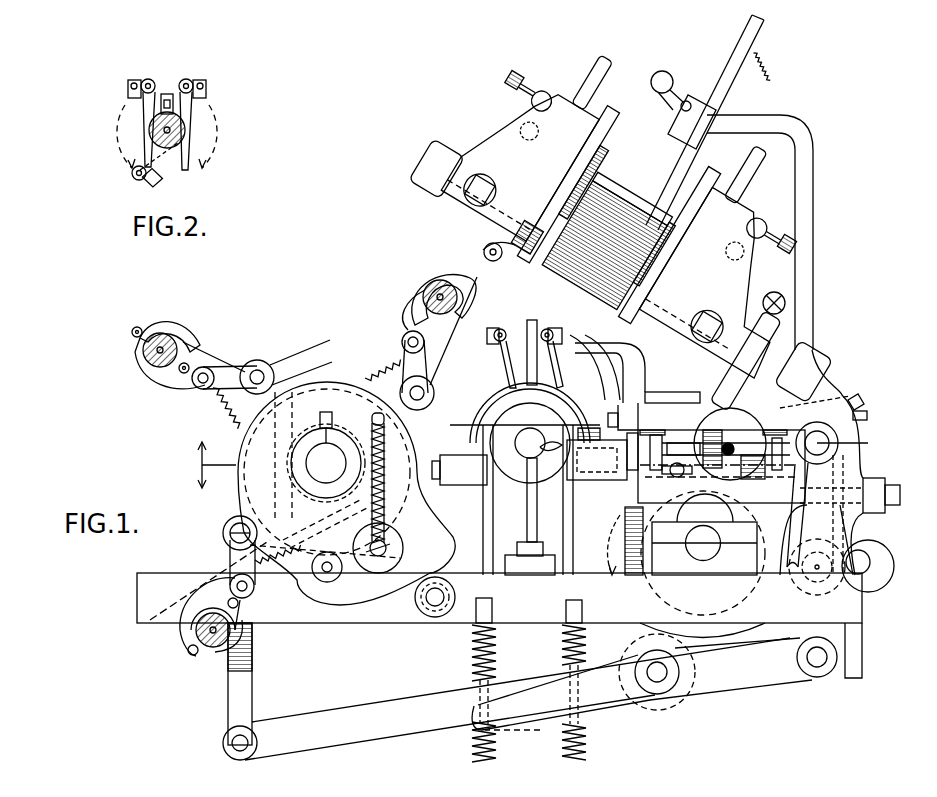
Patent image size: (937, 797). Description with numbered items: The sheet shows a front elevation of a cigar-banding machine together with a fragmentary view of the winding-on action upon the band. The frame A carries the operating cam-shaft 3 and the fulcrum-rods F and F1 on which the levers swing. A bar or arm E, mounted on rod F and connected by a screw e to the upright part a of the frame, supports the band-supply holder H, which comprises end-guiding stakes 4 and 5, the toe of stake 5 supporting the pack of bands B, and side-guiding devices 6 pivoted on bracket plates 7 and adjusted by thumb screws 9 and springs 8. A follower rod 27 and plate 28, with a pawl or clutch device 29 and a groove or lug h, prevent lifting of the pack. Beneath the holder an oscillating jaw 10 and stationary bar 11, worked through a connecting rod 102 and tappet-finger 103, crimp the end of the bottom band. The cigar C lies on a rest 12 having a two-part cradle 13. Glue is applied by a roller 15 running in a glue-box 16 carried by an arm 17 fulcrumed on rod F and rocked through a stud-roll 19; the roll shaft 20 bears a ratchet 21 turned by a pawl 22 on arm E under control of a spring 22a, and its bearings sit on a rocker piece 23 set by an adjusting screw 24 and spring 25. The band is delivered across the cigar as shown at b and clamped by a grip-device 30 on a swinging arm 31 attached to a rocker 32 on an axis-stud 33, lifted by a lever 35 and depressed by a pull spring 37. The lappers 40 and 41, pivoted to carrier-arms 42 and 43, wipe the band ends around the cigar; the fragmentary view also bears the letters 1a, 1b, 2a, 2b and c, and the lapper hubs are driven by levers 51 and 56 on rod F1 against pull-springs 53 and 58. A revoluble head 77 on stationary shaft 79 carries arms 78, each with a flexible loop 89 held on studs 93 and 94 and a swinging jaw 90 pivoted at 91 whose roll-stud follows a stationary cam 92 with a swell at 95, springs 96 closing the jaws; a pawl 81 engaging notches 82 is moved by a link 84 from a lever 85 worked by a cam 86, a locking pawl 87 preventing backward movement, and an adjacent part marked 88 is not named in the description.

In FIG. 2, the pivot 1a is at (145, 79).
In FIG. 2, the pivot 1b is at (190, 79).
In FIG. 2, the grip-device 30 is at (167, 94).
In FIG. 1, the grip-device 30 is at (528, 322).
In FIG. 2, the lapper 40 is at (147, 112).
In FIG. 1, the lapper 40 is at (504, 360).
In FIG. 2, the lapper 41 is at (188, 112).
In FIG. 1, the lapper 41 is at (552, 330).
In FIG. 2, the pivot 2a is at (134, 178).
In FIG. 2, the pivot 2b is at (200, 170).
In FIG. 2, the band position b is at (184, 166).
In FIG. 1, the band position b is at (455, 415).
In FIG. 2, the roller c is at (167, 136).
In FIG. 1, the frame A is at (499, 584).
In FIG. 1, the pack of bands B is at (644, 230).
In FIG. 1, the cigar C is at (525, 489).
In FIG. 1, the arm E is at (432, 178).
In FIG. 1, the fulcrum-rod F is at (839, 414).
In FIG. 1, the fulcrum-rod F1 is at (822, 666).
In FIG. 1, the band-supply holder H is at (459, 121).
In FIG. 1, the groove or lug h is at (660, 212).
In FIG. 1, the upright part of the frame a is at (826, 515).
In FIG. 1, the screw or bolt e is at (900, 495).
In FIG. 1, the operating shaft 3 is at (704, 534).
In FIG. 1, the end-guiding stake 4 is at (588, 102).
In FIG. 1, the end-guiding stake 5 is at (735, 178).
In FIG. 1, the side-guiding devices 6 is at (598, 160).
In FIG. 1, the bracket plates 7 is at (594, 248).
In FIG. 1, the springs 8 is at (524, 130).
In FIG. 1, the thumb screws 9 is at (520, 92).
In FIG. 1, the oscillating jaw 10 is at (486, 246).
In FIG. 1, the stationary bar 11 is at (516, 278).
In FIG. 1, the rest 12 is at (527, 498).
In FIG. 1, the cradle portion 13 is at (515, 448).
In FIG. 1, the glue-applying roller 15 is at (588, 442).
In FIG. 1, the glue-box 16 is at (597, 460).
In FIG. 1, the arm 17 is at (785, 519).
In FIG. 1, the stud-roll 19 is at (730, 444).
In FIG. 1, the glue-roll shaft 20 is at (726, 450).
In FIG. 1, the ratchet 21 is at (721, 453).
In FIG. 1, the pawl 22 is at (735, 362).
In FIG. 1, the spring 22a is at (771, 295).
In FIG. 1, the rocker piece 23 is at (717, 465).
In FIG. 1, the adjusting screw 24 is at (676, 479).
In FIG. 1, the spring 25 is at (751, 477).
In FIG. 1, the follower rod 27 is at (720, 90).
In FIG. 1, the follower plate 28 is at (636, 213).
In FIG. 1, the pawl or clutch device 29 is at (682, 120).
In FIG. 1, the swinging arm 31 is at (595, 345).
In FIG. 1, the rocker 32 is at (716, 455).
In FIG. 1, the axis-stud 33 is at (608, 418).
In FIG. 1, the swinging lever 35 is at (848, 536).
In FIG. 1, the pull spring 37 is at (623, 541).
In FIG. 1, the carrier-arm 42 is at (510, 400).
In FIG. 1, the carrier-arm 43 is at (592, 368).
In FIG. 1, the lever 51 is at (630, 712).
In FIG. 1, the pull-spring 53 is at (472, 748).
In FIG. 1, the lever 56 is at (518, 732).
In FIG. 1, the pull spring 58 is at (587, 748).
In FIG. 1, the revoluble head 77 is at (203, 465).
In FIG. 1, the arms 78 is at (222, 360).
In FIG. 1, the stationary shaft 79 is at (326, 457).
In FIG. 1, the pawl 81 is at (290, 360).
In FIG. 1, the notches 82 is at (250, 505).
In FIG. 1, the link 84 is at (245, 695).
In FIG. 1, the lever 85 is at (355, 726).
In FIG. 1, the cam 86 is at (702, 632).
In FIG. 1, the locking pawl 87 is at (376, 572).
In FIG. 1, the spring 88 is at (372, 506).
In FIG. 1, the flexible strip or loop 89 is at (158, 326).
In FIG. 1, the swinging jaw 90 is at (140, 367).
In FIG. 1, the pivot 91 is at (201, 389).
In FIG. 1, the stationary cam 92 is at (388, 595).
In FIG. 1, the stud 93 is at (133, 329).
In FIG. 1, the stud 94 is at (187, 363).
In FIG. 1, the swell of the cam 95 is at (292, 574).
In FIG. 1, the springs 96 is at (214, 420).
In FIG. 1, the connecting rod 102 is at (867, 415).
In FIG. 1, the tappet-finger 103 is at (858, 398).